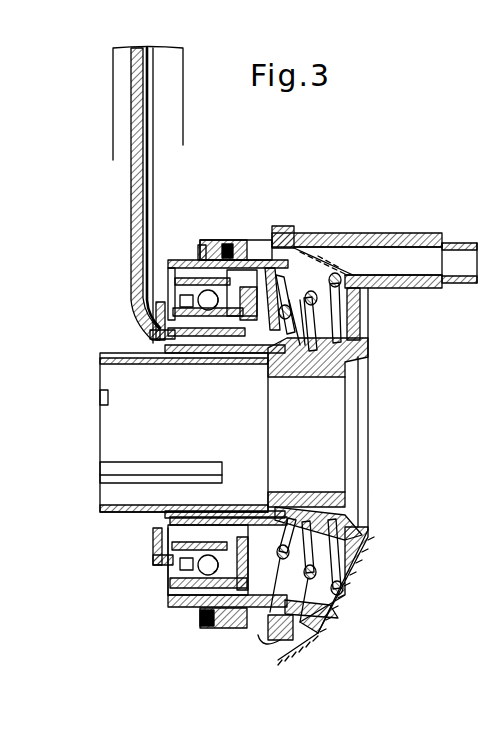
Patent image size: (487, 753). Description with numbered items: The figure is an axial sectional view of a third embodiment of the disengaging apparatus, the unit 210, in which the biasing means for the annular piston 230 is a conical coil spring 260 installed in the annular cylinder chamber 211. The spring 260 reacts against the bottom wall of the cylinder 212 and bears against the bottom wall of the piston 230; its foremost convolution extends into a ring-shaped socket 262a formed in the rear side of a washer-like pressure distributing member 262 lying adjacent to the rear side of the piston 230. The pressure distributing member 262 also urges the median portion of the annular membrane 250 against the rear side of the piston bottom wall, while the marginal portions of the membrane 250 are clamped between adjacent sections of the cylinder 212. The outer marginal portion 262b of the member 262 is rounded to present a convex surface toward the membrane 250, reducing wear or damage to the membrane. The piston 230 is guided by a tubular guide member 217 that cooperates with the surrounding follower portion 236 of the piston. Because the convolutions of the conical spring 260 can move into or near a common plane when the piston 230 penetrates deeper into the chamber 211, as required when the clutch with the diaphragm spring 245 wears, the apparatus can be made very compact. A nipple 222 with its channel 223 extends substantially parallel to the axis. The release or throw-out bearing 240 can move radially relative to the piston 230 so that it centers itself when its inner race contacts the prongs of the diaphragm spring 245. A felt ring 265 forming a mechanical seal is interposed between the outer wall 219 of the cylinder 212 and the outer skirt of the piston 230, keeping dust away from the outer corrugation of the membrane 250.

The unit 210 is at (381, 566).
The annular cylinder chamber 211 is at (271, 238).
The cylinder 212 is at (360, 325).
The tubular guide member 217 is at (133, 513).
The outer wall 219 is at (222, 240).
The nipple 222 is at (378, 233).
The channel 223 is at (457, 258).
The annular piston 230 is at (178, 612).
The follower portion 236 is at (193, 505).
The release or throw-out bearing 240 is at (173, 590).
The diaphragm spring 245 is at (133, 184).
The annular membrane 250 is at (238, 507).
The conical coil spring 260 is at (338, 605).
The pressure distributing member 262 is at (308, 622).
The ring-shaped socket 262a is at (370, 538).
The outer marginal portion 262b is at (282, 640).
The felt ring 265 is at (218, 240).